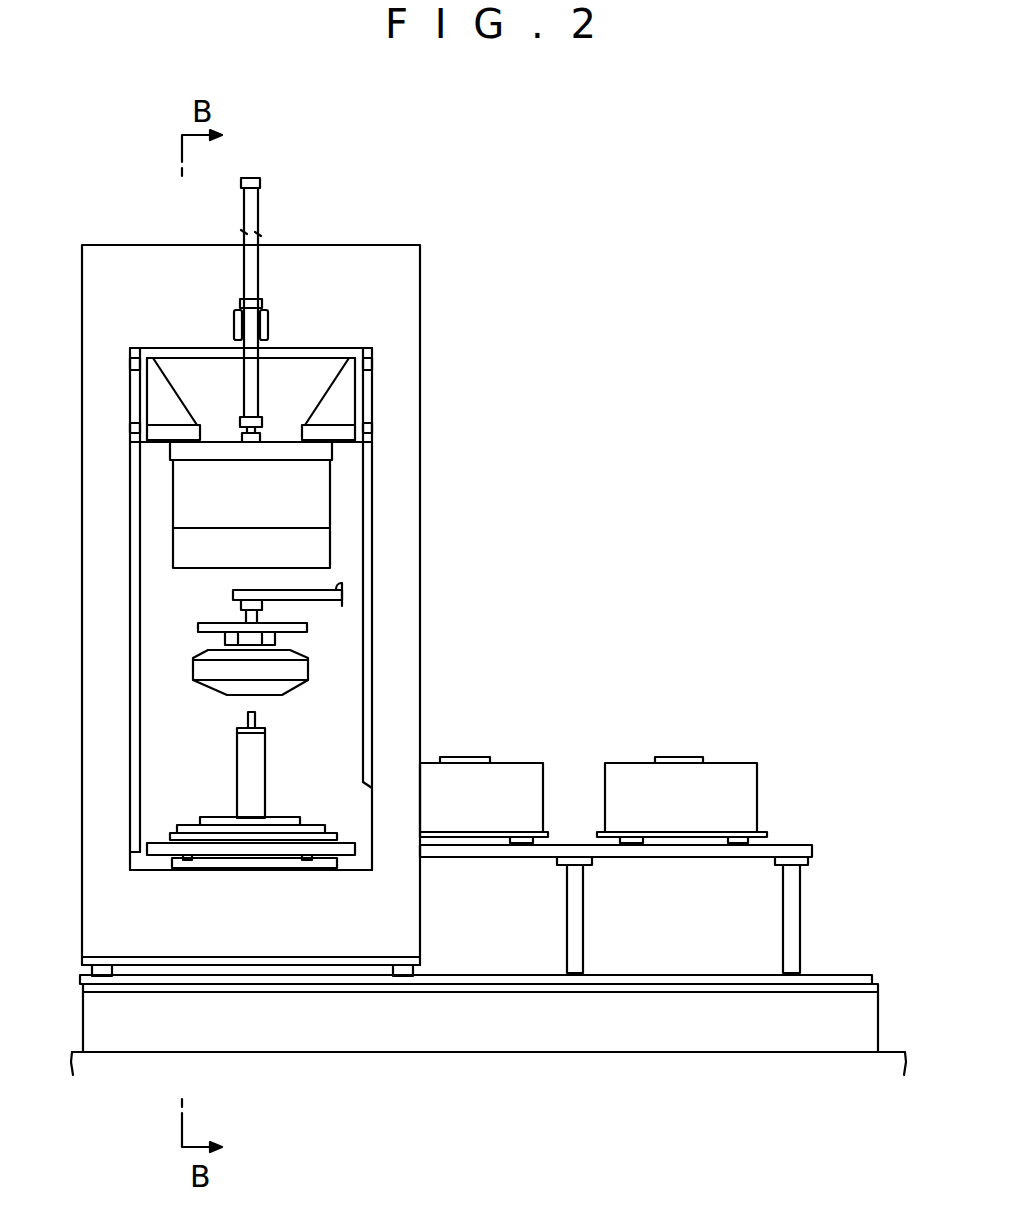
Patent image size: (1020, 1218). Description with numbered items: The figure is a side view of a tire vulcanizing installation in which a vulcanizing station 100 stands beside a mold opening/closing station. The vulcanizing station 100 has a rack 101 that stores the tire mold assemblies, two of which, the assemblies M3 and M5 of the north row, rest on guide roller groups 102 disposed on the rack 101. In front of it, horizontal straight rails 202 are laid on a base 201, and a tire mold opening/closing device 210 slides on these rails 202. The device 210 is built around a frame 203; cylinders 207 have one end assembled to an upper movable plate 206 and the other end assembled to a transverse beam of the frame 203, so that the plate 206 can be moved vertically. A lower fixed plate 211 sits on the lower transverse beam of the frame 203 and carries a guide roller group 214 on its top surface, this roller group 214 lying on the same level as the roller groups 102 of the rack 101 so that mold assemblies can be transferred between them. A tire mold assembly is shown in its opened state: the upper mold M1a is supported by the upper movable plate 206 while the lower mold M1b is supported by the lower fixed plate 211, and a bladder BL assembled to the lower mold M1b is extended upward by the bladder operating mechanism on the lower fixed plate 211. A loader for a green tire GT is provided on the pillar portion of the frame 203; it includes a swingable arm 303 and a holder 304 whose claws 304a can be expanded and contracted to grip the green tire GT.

The cylinder 207 is at (250, 205).
The tire mold opening/closing device 210 is at (472, 261).
The frame 203 is at (421, 380).
The upper movable plate 206 is at (321, 455).
The upper mold M1a is at (300, 497).
The arm 303 is at (315, 588).
The holder 304 is at (278, 637).
The claws 304a is at (223, 641).
The green tire GT is at (290, 672).
The bladder BL is at (242, 768).
The lower mold M1b is at (287, 817).
The guide roller group 214 is at (197, 843).
The lower fixed plate 211 is at (355, 850).
The vulcanizing station 100 is at (800, 795).
The rack 101 is at (803, 847).
The guide roller group 102 is at (517, 843).
The tire mold assembly M3 is at (482, 757).
The tire mold assembly M5 is at (693, 757).
The horizontal straight rails 202 is at (470, 974).
The base 201 is at (845, 975).